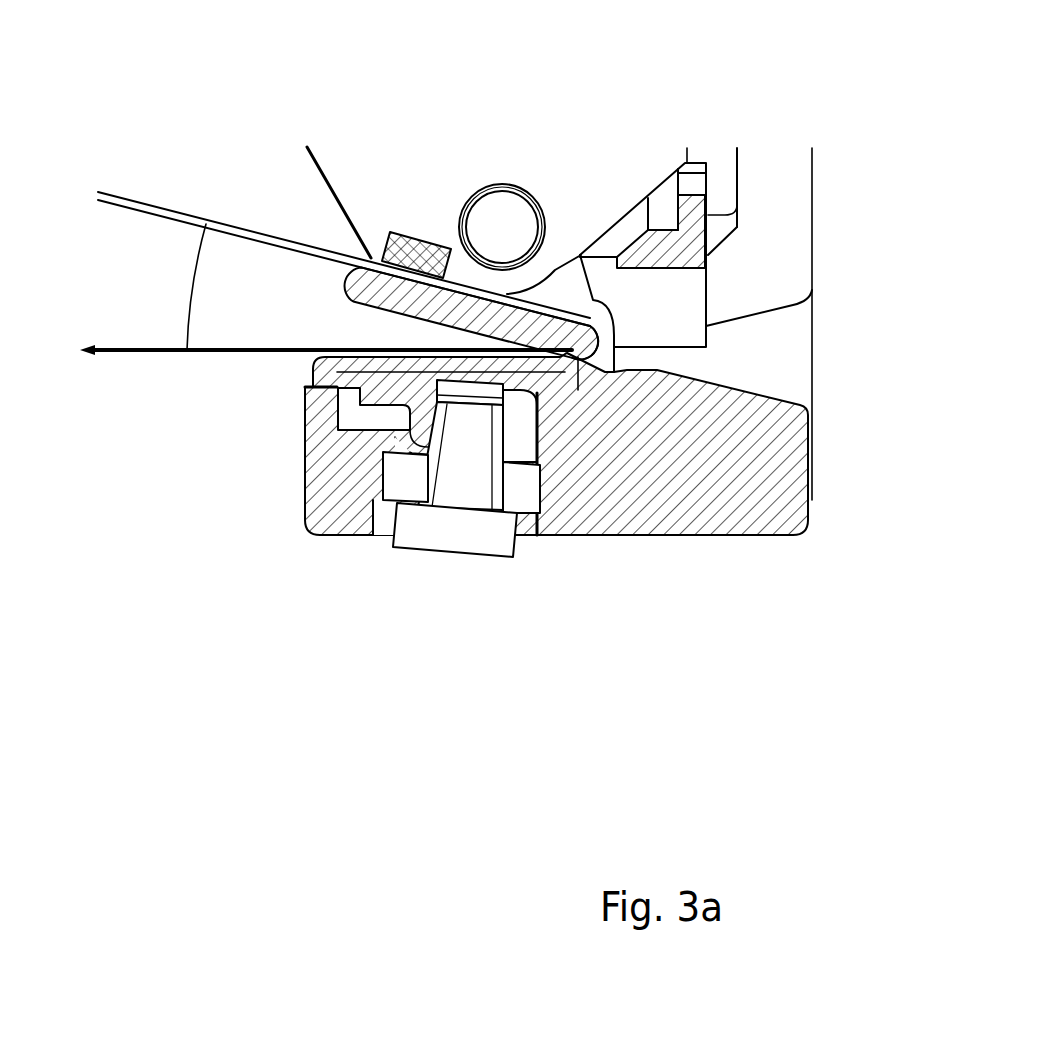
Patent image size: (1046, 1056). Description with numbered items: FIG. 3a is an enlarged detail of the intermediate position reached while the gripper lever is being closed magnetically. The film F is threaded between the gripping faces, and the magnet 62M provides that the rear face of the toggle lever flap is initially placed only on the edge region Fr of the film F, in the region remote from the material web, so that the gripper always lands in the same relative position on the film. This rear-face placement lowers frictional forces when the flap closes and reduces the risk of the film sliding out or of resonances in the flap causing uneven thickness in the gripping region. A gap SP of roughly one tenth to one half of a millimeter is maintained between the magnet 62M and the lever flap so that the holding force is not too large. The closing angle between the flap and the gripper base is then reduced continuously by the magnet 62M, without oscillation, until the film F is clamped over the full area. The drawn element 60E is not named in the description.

The magnet 62M is at (418, 245).
The clamping lever element 60E is at (350, 283).
The edge region of the film Fr is at (571, 340).
The gap SP is at (133, 120).
The film F is at (314, 352).